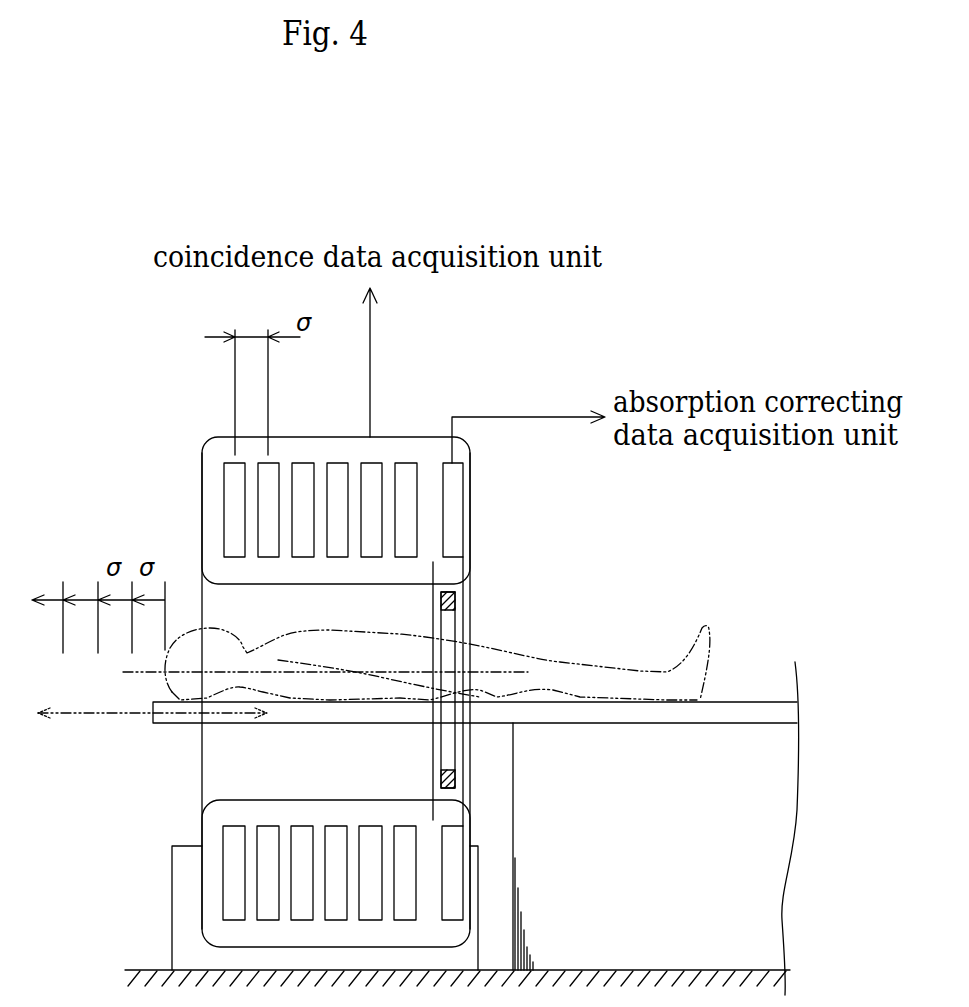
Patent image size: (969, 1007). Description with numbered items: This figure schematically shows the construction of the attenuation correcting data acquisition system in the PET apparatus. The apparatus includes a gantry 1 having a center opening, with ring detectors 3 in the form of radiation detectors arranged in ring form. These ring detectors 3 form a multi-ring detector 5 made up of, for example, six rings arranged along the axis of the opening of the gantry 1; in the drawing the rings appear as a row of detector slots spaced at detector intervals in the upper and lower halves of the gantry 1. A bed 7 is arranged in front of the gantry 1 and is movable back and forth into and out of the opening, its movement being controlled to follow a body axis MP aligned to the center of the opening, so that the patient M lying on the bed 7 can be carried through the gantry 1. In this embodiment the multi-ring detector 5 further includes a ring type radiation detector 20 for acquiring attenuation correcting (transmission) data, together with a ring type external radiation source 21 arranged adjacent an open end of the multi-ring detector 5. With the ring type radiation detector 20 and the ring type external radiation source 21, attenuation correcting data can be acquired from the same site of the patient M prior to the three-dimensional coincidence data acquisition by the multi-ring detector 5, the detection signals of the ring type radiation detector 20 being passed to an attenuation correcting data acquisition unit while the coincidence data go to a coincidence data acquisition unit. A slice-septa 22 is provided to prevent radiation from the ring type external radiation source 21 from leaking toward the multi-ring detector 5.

The gantry 1 is at (488, 386).
The ring detectors 3 is at (334, 472).
The multi-ring detector 5 is at (214, 449).
The bed 7 is at (745, 700).
The ring type radiation detector 20 is at (455, 493).
The ring type external radiation source 21 is at (447, 748).
The slice-septa 22 is at (433, 783).
The patient M is at (496, 645).
The body axis MP is at (510, 665).